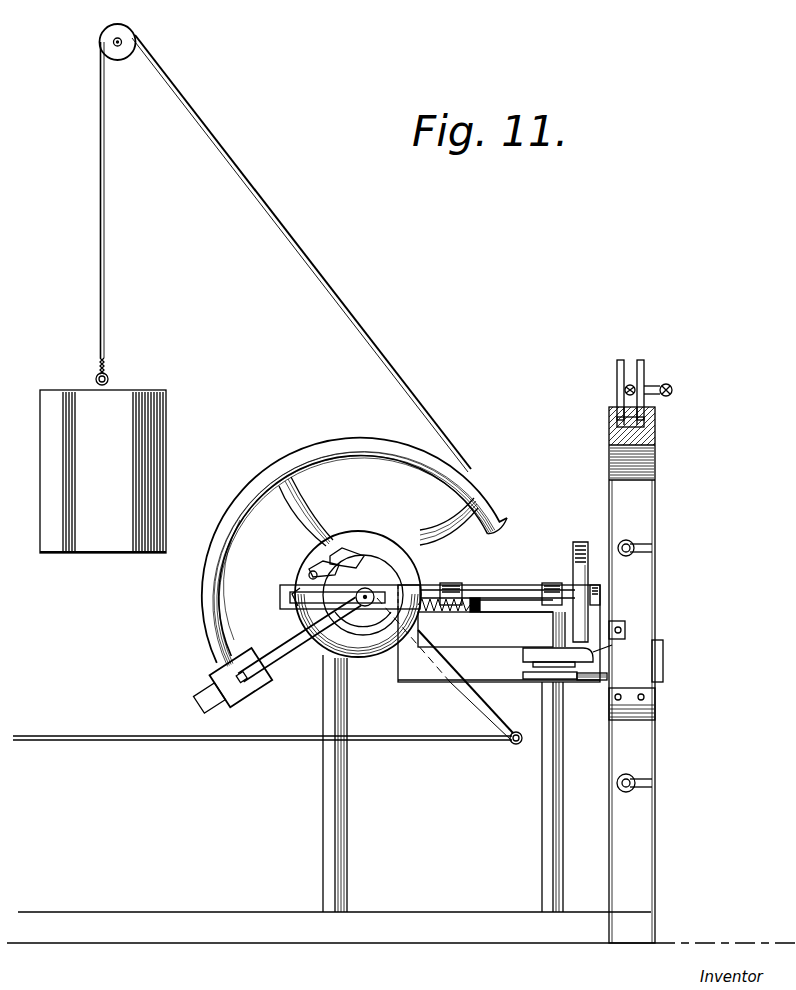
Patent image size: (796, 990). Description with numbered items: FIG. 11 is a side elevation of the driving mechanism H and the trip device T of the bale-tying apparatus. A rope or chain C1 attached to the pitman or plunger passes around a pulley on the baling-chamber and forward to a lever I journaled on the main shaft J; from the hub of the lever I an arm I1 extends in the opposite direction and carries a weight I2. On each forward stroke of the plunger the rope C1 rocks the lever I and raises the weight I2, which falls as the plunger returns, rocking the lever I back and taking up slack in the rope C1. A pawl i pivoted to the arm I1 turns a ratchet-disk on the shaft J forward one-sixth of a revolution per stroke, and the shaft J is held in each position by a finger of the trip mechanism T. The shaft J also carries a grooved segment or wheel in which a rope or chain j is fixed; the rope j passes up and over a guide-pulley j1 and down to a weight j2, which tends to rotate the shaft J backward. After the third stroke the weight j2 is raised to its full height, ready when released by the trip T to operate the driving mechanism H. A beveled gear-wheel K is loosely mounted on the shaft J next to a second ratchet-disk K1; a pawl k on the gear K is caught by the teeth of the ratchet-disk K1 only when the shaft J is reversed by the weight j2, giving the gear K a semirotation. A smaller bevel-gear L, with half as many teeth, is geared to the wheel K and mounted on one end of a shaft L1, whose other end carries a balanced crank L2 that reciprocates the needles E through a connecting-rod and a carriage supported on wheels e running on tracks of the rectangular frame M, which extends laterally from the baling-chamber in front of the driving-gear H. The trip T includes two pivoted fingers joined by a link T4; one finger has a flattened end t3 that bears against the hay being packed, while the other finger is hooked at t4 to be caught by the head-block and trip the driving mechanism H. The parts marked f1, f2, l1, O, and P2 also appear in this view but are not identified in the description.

The guide-pulley j1 is at (141, 34).
The rope or chain j is at (387, 355).
The weight j2 is at (103, 471).
The driving mechanism H is at (370, 552).
The wheel rim f2 is at (208, 585).
The ratchet f1 is at (333, 548).
The ratchet-disk K1 is at (365, 545).
The main shaft J is at (385, 540).
The pivot pin l1 is at (410, 545).
The pawl k is at (304, 566).
The beveled gear-wheel K is at (308, 580).
The bevel-gear L is at (435, 579).
The shaft L1 is at (465, 593).
The balanced crank L2 is at (577, 540).
The trip mechanism T is at (499, 633).
The flattened end t3 is at (612, 628).
The hooked end t4 is at (520, 664).
The link T4 is at (540, 680).
The rectangular frame M is at (634, 675).
The wheels e is at (642, 368).
The pivot screw O is at (620, 390).
The adjusting screw P2 is at (672, 390).
The needles E is at (654, 547).
The rope or chain C1 is at (208, 741).
The weight I2 is at (218, 676).
The arm I1 is at (290, 660).
The pawl i is at (305, 612).
The lever I is at (468, 704).